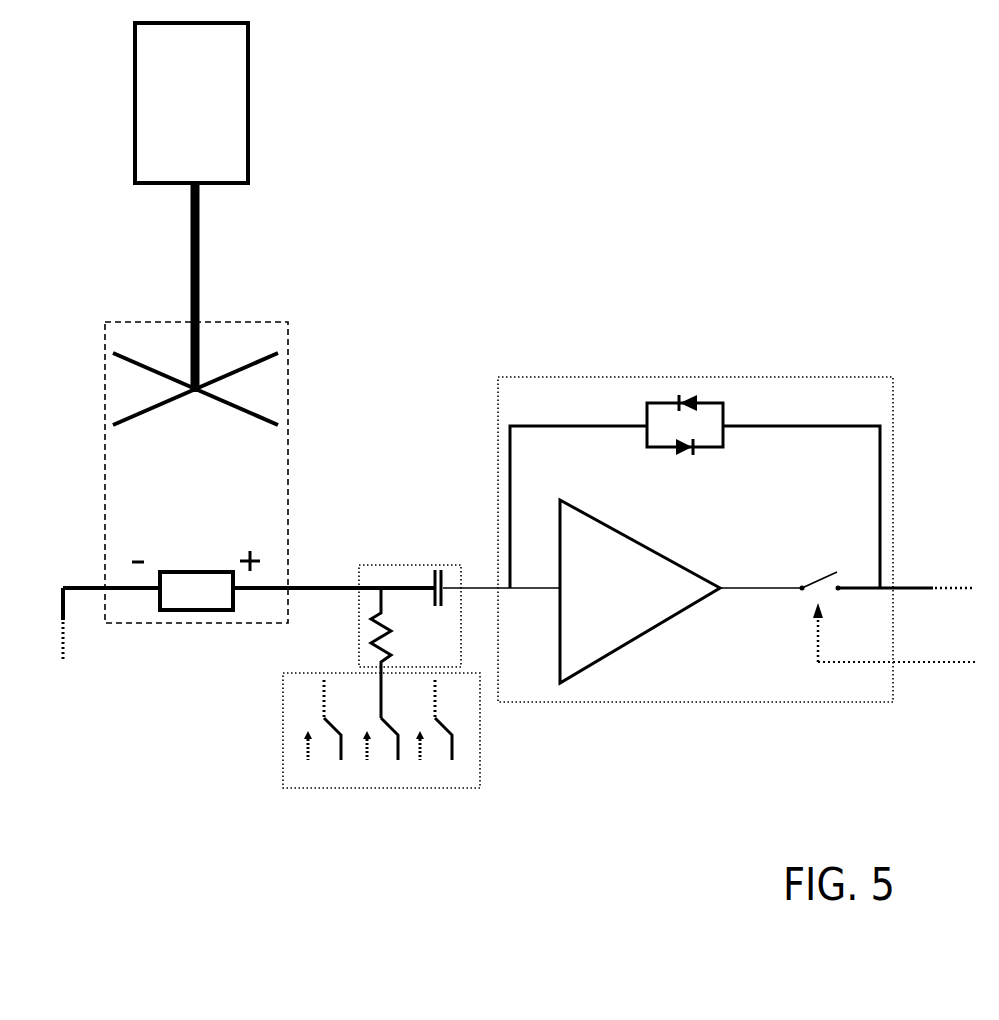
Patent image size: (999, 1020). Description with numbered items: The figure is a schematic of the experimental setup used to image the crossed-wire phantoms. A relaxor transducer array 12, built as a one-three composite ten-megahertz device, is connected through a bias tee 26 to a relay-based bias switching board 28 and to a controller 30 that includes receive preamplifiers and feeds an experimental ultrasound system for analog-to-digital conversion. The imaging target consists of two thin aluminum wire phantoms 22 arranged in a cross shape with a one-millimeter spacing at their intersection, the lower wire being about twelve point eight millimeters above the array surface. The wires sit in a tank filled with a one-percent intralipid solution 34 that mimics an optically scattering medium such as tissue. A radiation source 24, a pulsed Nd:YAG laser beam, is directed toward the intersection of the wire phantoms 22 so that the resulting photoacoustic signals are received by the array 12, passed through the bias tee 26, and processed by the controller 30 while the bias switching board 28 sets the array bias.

The array 12 is at (197, 610).
The wire phantoms 22 is at (250, 367).
The radiation source 24 is at (220, 103).
The bias tee 26 is at (413, 573).
The relay-based bias switching board 28 is at (455, 768).
The controller 30 is at (798, 400).
The intralipid solution 34 is at (248, 470).